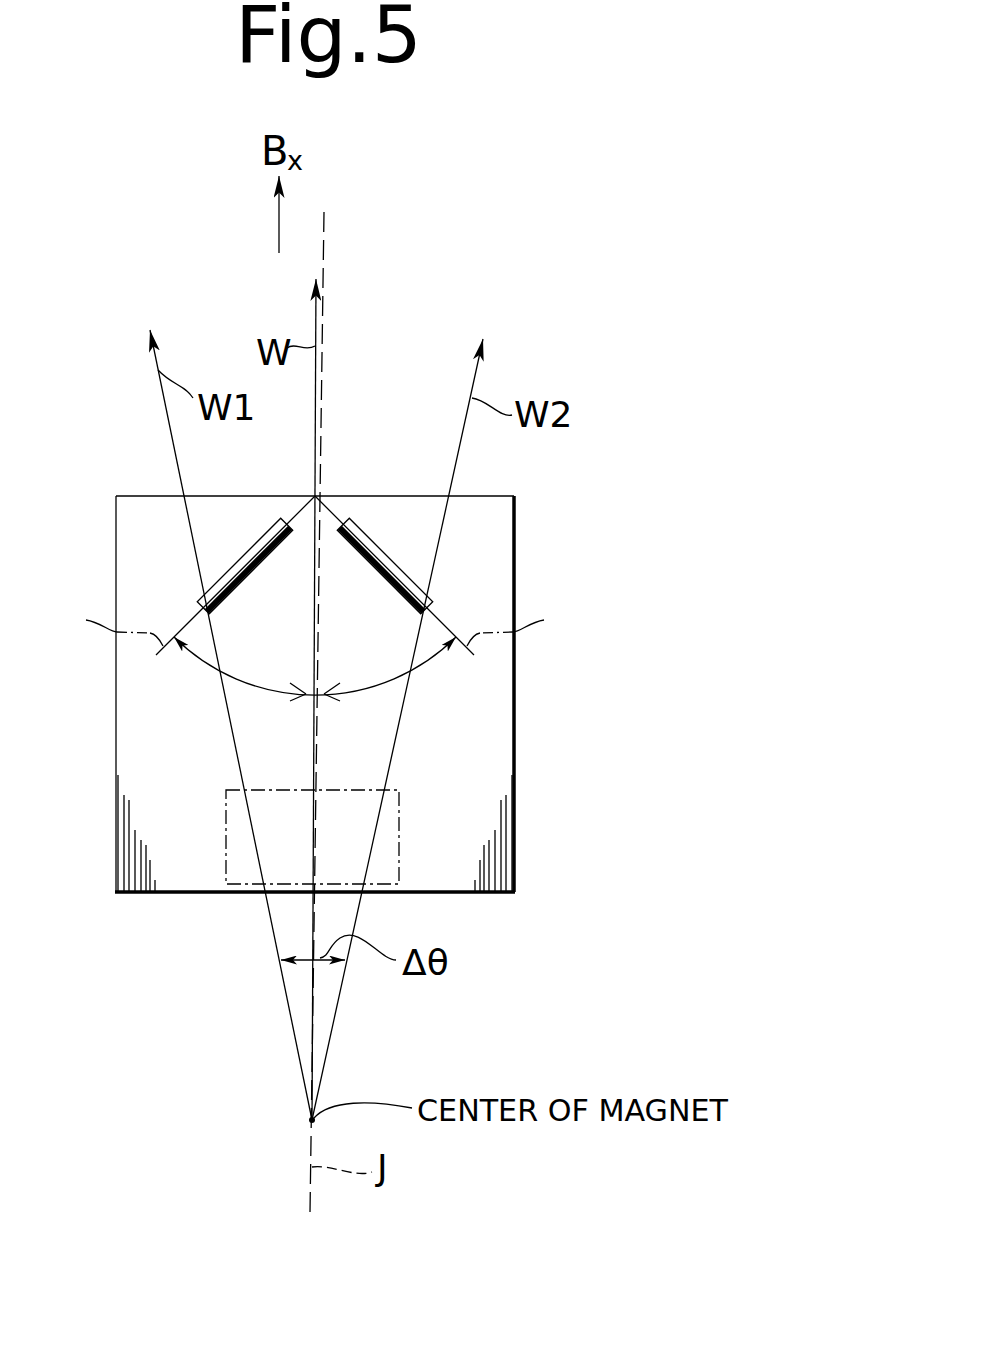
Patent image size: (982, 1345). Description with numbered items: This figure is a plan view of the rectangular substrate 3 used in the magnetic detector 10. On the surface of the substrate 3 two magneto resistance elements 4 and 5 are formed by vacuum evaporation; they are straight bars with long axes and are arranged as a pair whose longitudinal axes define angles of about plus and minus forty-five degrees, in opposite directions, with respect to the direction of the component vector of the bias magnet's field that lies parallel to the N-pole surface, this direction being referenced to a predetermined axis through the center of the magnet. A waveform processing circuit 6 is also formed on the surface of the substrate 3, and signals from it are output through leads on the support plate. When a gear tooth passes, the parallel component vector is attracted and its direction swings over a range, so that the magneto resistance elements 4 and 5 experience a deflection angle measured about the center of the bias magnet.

The substrate 3 is at (514, 735).
The magneto resistance element 4 is at (232, 562).
The magneto resistance element 5 is at (399, 572).
The waveform processing circuit 6 is at (399, 805).
The magnetic detector 10 is at (677, 689).